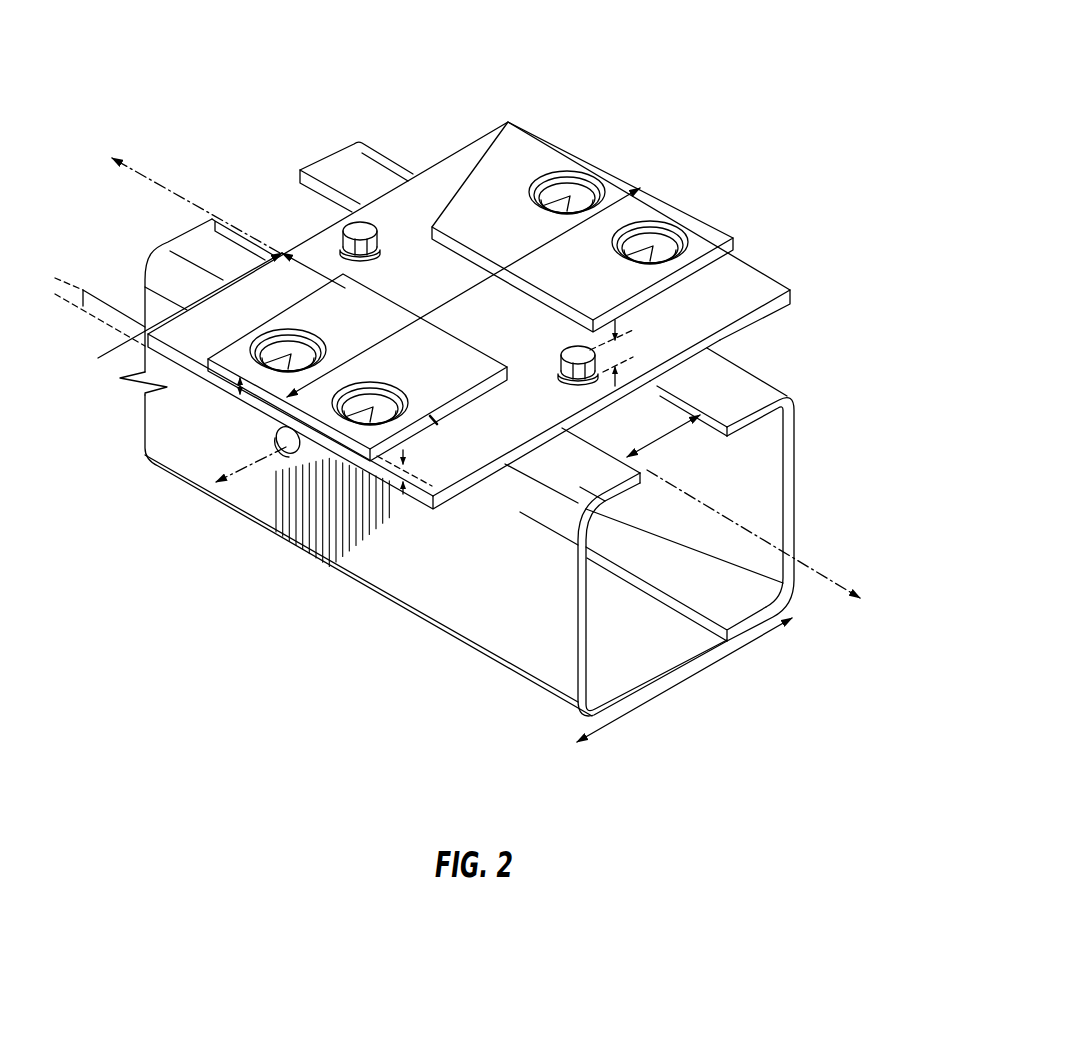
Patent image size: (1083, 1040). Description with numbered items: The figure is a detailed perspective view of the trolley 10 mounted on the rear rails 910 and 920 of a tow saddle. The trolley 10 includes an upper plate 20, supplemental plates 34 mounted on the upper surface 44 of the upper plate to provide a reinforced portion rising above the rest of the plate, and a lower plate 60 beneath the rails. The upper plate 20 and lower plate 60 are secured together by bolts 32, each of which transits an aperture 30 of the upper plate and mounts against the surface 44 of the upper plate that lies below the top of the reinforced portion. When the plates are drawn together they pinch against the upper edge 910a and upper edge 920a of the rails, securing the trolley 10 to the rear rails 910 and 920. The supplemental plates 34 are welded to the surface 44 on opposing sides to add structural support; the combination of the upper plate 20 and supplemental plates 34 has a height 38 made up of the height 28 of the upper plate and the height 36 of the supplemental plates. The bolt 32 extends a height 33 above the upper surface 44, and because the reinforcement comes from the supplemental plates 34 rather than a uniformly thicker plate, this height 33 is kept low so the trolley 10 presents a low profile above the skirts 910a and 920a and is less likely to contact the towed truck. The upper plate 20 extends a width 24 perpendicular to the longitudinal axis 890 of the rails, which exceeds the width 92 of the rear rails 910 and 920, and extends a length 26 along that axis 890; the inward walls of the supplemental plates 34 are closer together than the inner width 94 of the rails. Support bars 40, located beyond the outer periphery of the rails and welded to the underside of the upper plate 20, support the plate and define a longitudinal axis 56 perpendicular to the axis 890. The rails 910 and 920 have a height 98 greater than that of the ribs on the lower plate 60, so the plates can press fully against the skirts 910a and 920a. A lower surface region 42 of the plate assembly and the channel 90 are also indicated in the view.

The trolley 10 is at (732, 90).
The upper plate 20 is at (470, 132).
The width 24 is at (527, 234).
The length 26 is at (307, 273).
The height 28 is at (94, 286).
The aperture 30 is at (336, 226).
The bolt 32 is at (357, 227).
The height 33 is at (620, 340).
The supplemental plate 34 is at (573, 158).
The height 36 is at (397, 472).
The height 38 is at (228, 400).
The support bar 40 is at (283, 454).
The plate lower surface 42 is at (701, 298).
The upper surface 44 is at (748, 282).
The longitudinal axis 56 is at (280, 441).
The lower plate 60 is at (546, 500).
The strut channel 90 is at (550, 432).
The width 92 is at (717, 675).
The width 94 is at (683, 442).
The height 98 is at (760, 418).
The longitudinal axis 890 is at (166, 193).
The rear rail 910 is at (516, 598).
The upper edge 910a is at (598, 483).
The rear rail 920 is at (800, 527).
The upper edge 920a is at (736, 388).